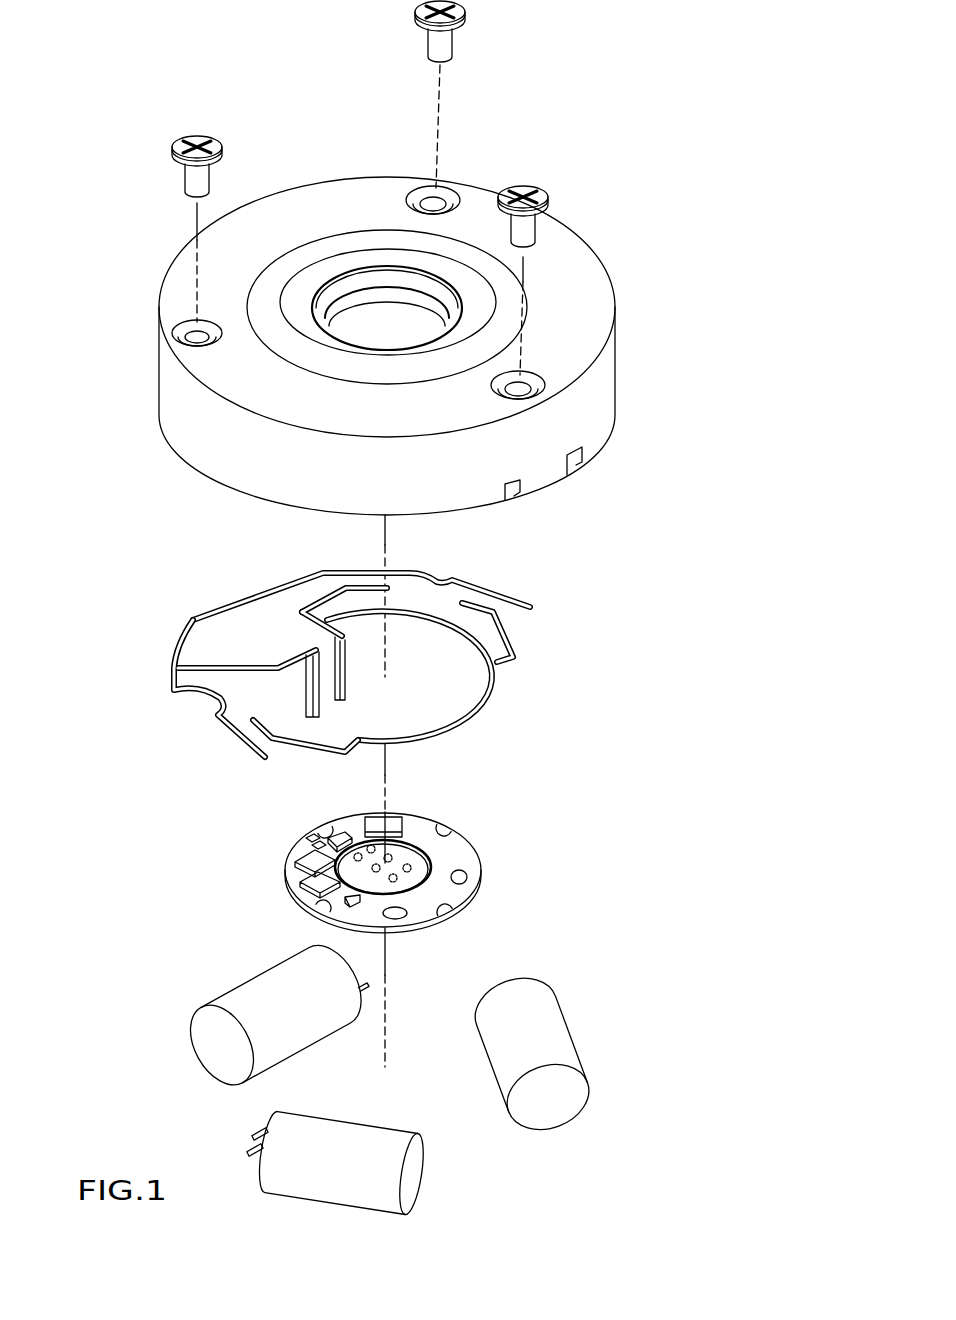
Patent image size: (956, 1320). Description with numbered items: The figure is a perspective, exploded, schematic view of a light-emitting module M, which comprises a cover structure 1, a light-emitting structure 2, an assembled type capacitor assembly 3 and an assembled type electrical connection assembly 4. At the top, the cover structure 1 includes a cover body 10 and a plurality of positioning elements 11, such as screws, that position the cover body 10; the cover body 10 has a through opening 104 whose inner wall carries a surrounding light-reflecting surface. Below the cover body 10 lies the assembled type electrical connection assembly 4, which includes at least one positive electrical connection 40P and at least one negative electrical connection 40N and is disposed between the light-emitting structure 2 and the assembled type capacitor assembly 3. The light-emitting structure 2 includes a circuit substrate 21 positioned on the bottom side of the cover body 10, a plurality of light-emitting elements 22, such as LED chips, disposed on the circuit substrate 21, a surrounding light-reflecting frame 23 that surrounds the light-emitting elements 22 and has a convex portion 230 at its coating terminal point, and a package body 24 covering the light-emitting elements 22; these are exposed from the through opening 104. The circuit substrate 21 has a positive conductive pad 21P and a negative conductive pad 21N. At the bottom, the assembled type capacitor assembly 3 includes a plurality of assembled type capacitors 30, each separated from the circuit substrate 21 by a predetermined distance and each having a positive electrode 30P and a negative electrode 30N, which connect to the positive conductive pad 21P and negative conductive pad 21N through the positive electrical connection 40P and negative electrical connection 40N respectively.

The light-emitting module M is at (54, 41).
The cover structure 1 is at (612, 348).
The cover body 10 is at (583, 287).
The through opening 104 is at (397, 325).
The positioning elements 11 is at (462, 8).
The assembled type electrical connection assembly 4 is at (612, 580).
The positive electrical connection 40P is at (497, 585).
The negative electrical connection 40N is at (507, 628).
The light-emitting structure 2 is at (286, 896).
The circuit substrate 21 is at (462, 847).
The negative conductive pad 21N is at (338, 823).
The positive conductive pad 21P is at (312, 838).
The light-emitting elements 22 is at (433, 877).
The surrounding light-reflecting frame 23 is at (413, 893).
The convex portion 230 is at (400, 897).
The package body 24 is at (418, 863).
The assembled type capacitor assembly 3 is at (626, 1125).
The assembled type capacitor 30 is at (540, 1107).
The negative electrode 30N is at (253, 1130).
The positive electrode 30P is at (247, 1150).